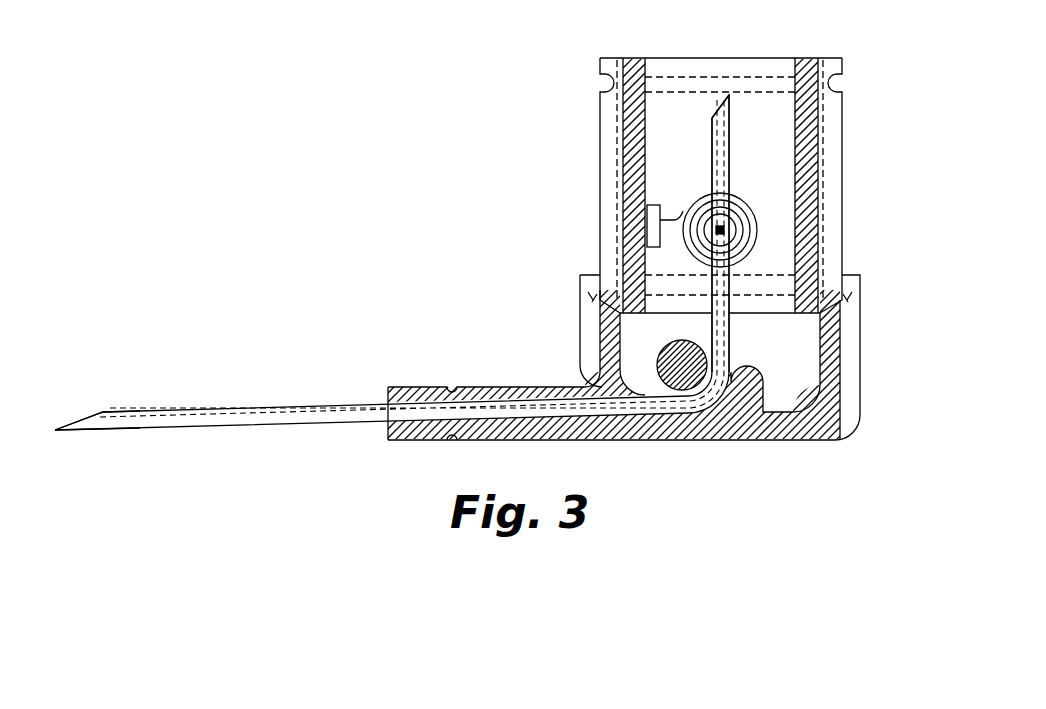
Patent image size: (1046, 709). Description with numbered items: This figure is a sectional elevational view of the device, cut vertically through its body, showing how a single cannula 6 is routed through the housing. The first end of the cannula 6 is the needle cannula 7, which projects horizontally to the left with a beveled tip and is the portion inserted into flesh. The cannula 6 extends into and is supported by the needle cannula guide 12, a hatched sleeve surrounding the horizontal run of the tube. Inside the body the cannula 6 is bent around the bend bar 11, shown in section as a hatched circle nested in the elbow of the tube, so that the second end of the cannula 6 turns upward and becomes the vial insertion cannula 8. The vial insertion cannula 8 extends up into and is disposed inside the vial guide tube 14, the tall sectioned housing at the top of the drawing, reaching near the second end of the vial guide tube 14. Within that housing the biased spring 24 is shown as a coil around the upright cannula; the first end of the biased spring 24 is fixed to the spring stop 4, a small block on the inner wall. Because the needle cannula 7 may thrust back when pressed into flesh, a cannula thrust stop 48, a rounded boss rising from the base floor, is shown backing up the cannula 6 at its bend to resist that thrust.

The vial guide tube 14 is at (690, 57).
The cannula thrust stop 48 is at (765, 386).
The needle cannula guide 12 is at (423, 399).
The needle cannula 7 is at (298, 405).
The vial insertion cannula 8 is at (729, 162).
The cannula 6 is at (192, 403).
The biased spring 24 is at (755, 213).
The spring stop 4 is at (660, 205).
The bend bar 11 is at (658, 358).